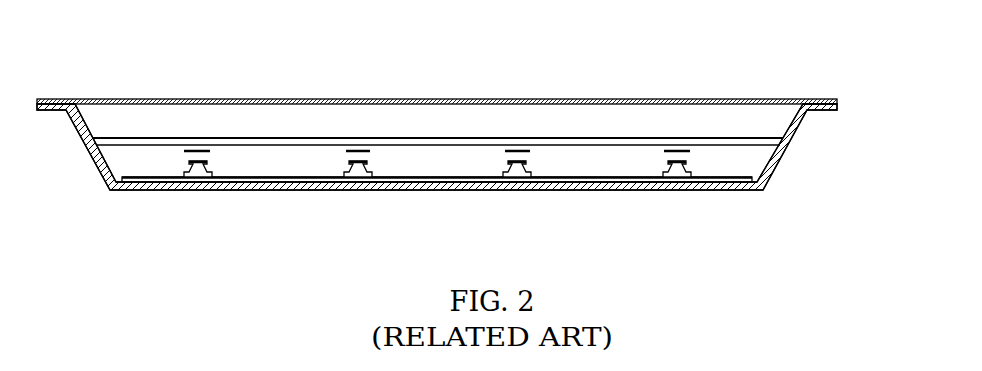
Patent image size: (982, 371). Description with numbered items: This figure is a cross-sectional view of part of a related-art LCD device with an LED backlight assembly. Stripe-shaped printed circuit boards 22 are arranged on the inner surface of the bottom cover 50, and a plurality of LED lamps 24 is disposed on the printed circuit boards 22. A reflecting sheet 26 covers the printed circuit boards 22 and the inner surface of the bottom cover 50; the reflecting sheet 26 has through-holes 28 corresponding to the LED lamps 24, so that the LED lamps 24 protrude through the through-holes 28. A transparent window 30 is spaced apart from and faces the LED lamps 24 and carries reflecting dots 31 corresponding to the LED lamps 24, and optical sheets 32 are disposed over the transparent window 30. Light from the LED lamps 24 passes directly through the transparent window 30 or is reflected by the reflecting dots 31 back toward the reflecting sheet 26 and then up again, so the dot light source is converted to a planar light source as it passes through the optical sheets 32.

The printed circuit board 22 is at (212, 165).
The LED lamp 24 is at (407, 158).
The reflecting sheet 26 is at (312, 191).
The through-hole 28 is at (407, 158).
The transparent window 30 is at (317, 140).
The reflecting dot 31 is at (517, 146).
The optical sheet 32 is at (845, 95).
The bottom cover 50 is at (480, 191).